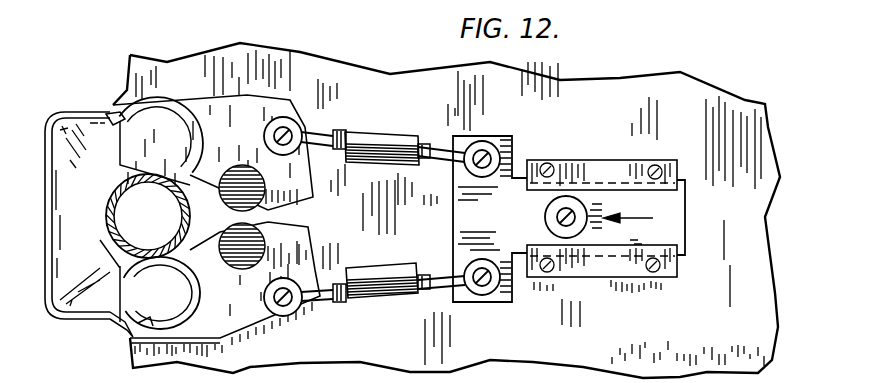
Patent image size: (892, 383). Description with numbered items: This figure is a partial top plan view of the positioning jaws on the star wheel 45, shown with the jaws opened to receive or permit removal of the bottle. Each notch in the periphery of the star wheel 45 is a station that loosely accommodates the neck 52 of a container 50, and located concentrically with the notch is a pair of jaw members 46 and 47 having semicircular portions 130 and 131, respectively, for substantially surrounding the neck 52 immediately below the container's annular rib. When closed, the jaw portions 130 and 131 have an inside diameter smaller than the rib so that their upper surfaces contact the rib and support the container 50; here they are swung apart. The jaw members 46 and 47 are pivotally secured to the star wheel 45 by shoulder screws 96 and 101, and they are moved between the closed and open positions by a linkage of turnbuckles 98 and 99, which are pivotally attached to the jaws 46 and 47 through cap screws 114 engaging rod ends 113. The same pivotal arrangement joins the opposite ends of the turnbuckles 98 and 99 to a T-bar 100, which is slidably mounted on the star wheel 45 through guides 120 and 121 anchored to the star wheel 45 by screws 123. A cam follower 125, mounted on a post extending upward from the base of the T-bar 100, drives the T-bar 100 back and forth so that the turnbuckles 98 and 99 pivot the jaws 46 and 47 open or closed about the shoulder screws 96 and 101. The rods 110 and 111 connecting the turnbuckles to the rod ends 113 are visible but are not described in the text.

The star wheel 45 is at (713, 100).
The jaw member 46 is at (220, 341).
The jaw member 47 is at (200, 97).
The container 50 is at (45, 298).
The neck 52 is at (107, 236).
The shoulder screw 96 is at (308, 201).
The turnbuckle 98 is at (365, 298).
The turnbuckle 99 is at (393, 136).
The T-bar 100 is at (687, 214).
The shoulder screw 101 is at (307, 229).
The upper rod 110 is at (340, 131).
The lower rod 111 is at (336, 280).
The rod end 113 is at (284, 135).
The cap screw 114 is at (338, 130).
The guide 120 is at (645, 160).
The guide 121 is at (673, 278).
The screw 123 is at (648, 268).
The cam follower 125 is at (568, 196).
The semicircular portion 130 is at (123, 318).
The semicircular portion 131 is at (118, 122).